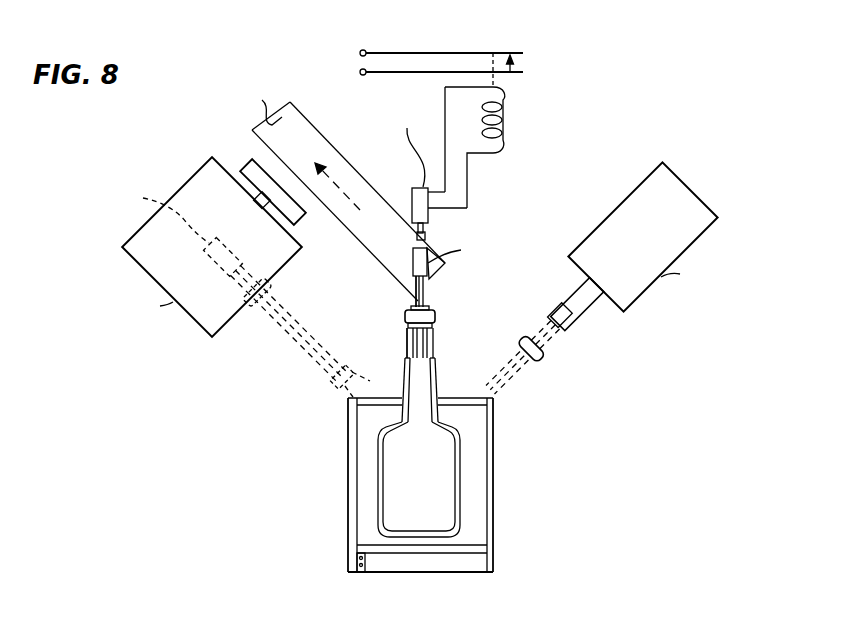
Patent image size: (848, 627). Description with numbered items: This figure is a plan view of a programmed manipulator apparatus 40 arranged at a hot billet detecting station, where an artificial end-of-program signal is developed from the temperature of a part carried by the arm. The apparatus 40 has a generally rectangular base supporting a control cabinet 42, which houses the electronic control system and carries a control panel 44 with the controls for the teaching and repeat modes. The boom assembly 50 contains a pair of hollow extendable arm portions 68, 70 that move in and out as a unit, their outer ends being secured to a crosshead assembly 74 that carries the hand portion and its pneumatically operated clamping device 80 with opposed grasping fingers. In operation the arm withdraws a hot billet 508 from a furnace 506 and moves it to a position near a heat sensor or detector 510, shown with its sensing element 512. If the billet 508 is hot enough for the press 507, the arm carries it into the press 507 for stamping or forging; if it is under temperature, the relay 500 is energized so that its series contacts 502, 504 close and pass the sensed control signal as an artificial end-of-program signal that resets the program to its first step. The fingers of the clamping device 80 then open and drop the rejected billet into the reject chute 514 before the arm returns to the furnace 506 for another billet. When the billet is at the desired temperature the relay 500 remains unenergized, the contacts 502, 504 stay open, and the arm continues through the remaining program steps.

The relay 500 is at (505, 113).
The relay contact 502 is at (503, 53).
The relay contact 504 is at (514, 70).
The furnace 506 is at (698, 213).
The press 507 is at (198, 313).
The hot billet 508 is at (583, 352).
The heat sensor or detector 510 is at (413, 190).
The detector probe 512 is at (425, 236).
The reject chute 514 is at (358, 238).
The pneumatically operated clamping device 80 is at (431, 292).
The crosshead assembly 74 is at (434, 316).
The hollow extendable arm portion 70 is at (433, 341).
The hollow extendable arm portion 68 is at (407, 343).
The boom assembly 50 is at (446, 379).
The manipulator apparatus 40 is at (500, 489).
The control panel 44 is at (408, 562).
The control cabinet 42 is at (459, 577).